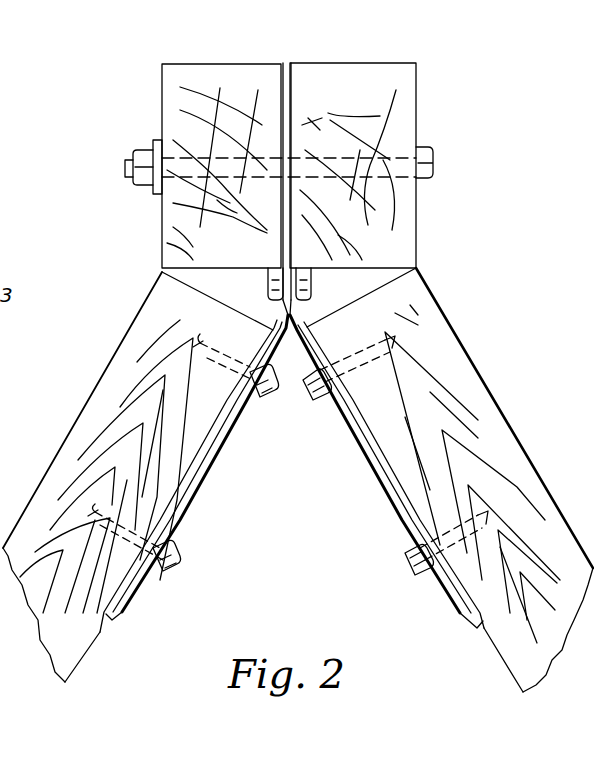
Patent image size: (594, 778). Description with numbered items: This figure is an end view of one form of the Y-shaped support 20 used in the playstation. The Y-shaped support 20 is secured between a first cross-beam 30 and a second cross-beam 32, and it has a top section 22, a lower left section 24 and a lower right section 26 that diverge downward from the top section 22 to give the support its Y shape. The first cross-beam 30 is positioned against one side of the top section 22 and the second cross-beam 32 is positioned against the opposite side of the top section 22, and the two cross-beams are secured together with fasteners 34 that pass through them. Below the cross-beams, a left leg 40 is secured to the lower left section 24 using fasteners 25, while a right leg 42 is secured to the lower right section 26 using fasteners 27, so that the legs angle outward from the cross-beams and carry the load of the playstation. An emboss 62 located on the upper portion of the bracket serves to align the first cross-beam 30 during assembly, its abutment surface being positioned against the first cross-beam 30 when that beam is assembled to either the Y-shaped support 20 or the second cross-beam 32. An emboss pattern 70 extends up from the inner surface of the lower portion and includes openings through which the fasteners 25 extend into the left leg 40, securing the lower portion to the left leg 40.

The Y-shaped support 20 is at (312, 302).
The top section 22 is at (305, 169).
The lower left section 24 is at (207, 447).
The fasteners 25 is at (262, 395).
The lower right section 26 is at (357, 420).
The fasteners 27 is at (330, 395).
The first cross-beam 30 is at (200, 73).
The second cross-beam 32 is at (378, 70).
The fasteners 34 is at (432, 173).
The left leg 40 is at (118, 380).
The right leg 42 is at (478, 398).
The emboss 62 is at (266, 280).
The emboss pattern 70 is at (124, 606).